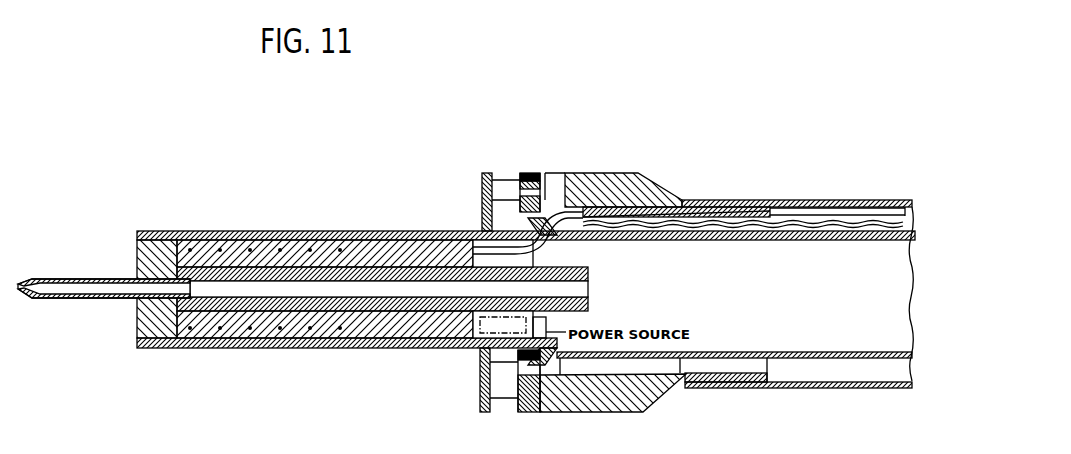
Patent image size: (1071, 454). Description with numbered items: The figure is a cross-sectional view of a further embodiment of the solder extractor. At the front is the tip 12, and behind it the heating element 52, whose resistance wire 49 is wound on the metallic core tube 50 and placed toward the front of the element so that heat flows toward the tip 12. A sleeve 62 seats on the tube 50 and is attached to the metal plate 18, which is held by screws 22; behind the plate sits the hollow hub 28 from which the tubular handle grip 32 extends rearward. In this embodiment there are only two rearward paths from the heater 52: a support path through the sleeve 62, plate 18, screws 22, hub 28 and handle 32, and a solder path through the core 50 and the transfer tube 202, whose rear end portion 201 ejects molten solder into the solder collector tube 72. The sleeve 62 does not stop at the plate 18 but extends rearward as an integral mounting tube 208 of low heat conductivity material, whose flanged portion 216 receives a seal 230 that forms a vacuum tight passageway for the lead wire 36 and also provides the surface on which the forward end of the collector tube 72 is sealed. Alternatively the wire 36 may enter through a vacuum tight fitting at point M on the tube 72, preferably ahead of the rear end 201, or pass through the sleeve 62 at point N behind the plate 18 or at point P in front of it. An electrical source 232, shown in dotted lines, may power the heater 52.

The tip 12 is at (78, 278).
The heating element 52 is at (265, 231).
The sleeve 62 is at (373, 231).
The point P is at (463, 231).
The screws 22 is at (480, 194).
The point N is at (500, 230).
The plate 18 is at (482, 206).
The hub 28 is at (645, 190).
The handle grip 32 is at (756, 200).
The lead wire 36 is at (545, 252).
The point M is at (583, 234).
The rear end portion 201 is at (590, 284).
The transfer tube 202 is at (590, 310).
The resistance wire 49 is at (282, 330).
The tube 50 is at (358, 306).
The electrical source 232 is at (472, 352).
The mounting tube 208 is at (480, 372).
The flanged portion 216 is at (522, 362).
The seal 230 is at (548, 366).
The solder collector tube 72 is at (831, 362).